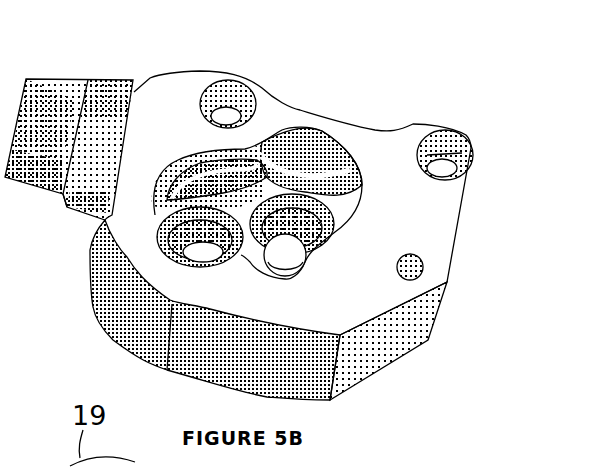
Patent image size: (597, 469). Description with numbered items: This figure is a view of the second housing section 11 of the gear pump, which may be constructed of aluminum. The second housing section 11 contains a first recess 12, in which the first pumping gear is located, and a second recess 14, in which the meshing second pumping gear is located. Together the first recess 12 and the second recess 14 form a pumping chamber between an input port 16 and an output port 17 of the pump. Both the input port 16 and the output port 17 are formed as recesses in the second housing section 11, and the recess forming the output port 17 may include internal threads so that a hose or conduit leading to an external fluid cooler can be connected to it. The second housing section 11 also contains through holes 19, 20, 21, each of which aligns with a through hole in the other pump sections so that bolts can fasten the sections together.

The second housing section 11 is at (455, 347).
The first recess 12 is at (167, 217).
The second recess 14 is at (317, 157).
The input port 16 is at (50, 100).
The output port 17 is at (283, 270).
The through hole 19 is at (443, 153).
The through hole 20 is at (422, 267).
The through hole 21 is at (222, 100).